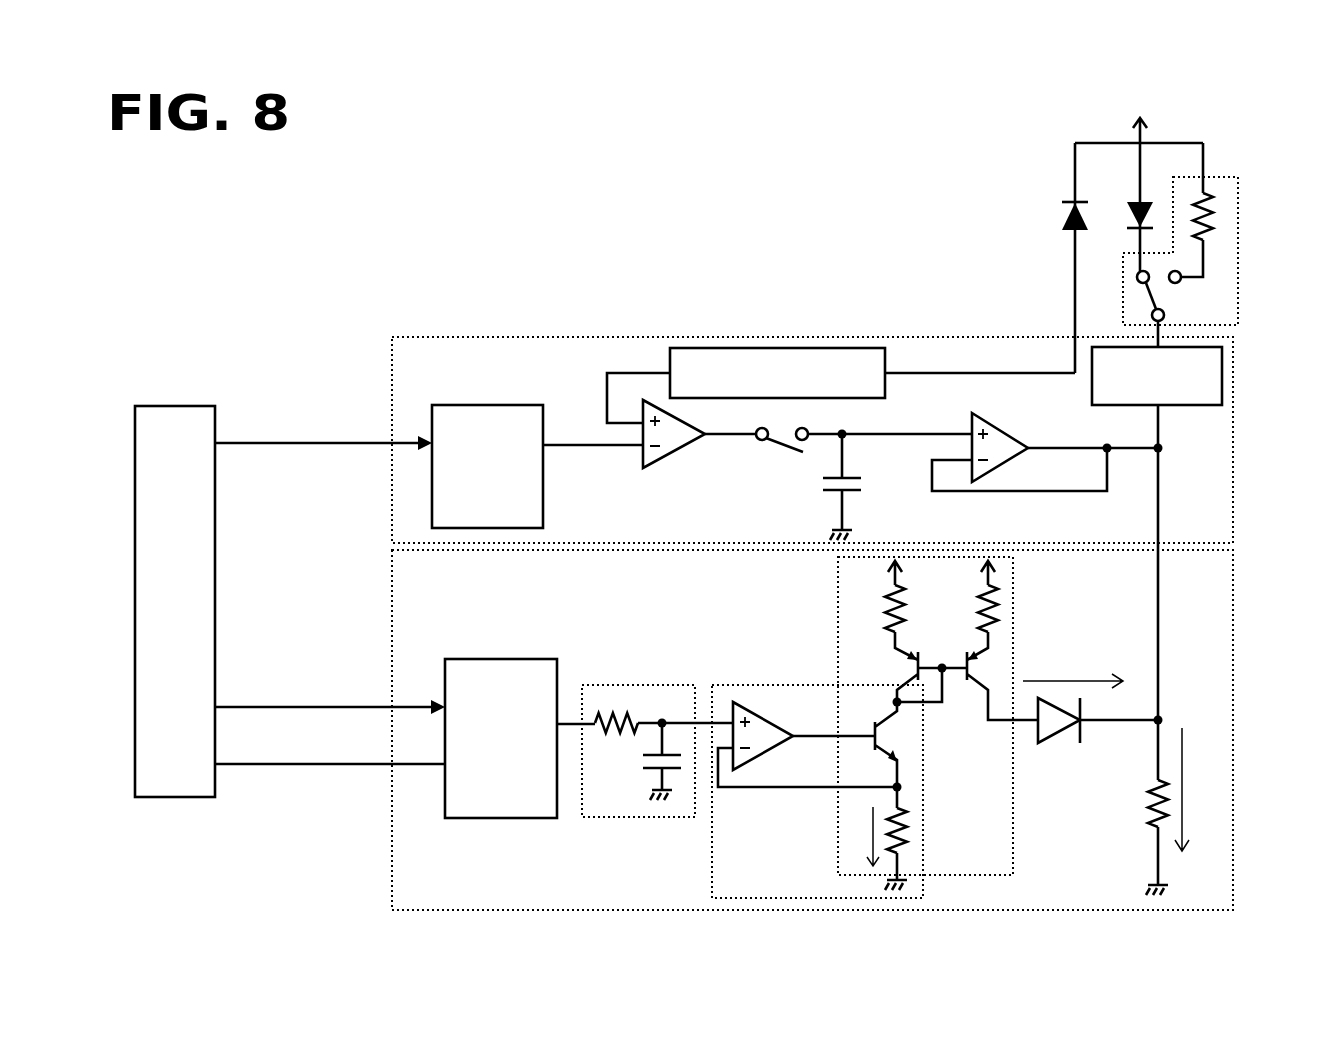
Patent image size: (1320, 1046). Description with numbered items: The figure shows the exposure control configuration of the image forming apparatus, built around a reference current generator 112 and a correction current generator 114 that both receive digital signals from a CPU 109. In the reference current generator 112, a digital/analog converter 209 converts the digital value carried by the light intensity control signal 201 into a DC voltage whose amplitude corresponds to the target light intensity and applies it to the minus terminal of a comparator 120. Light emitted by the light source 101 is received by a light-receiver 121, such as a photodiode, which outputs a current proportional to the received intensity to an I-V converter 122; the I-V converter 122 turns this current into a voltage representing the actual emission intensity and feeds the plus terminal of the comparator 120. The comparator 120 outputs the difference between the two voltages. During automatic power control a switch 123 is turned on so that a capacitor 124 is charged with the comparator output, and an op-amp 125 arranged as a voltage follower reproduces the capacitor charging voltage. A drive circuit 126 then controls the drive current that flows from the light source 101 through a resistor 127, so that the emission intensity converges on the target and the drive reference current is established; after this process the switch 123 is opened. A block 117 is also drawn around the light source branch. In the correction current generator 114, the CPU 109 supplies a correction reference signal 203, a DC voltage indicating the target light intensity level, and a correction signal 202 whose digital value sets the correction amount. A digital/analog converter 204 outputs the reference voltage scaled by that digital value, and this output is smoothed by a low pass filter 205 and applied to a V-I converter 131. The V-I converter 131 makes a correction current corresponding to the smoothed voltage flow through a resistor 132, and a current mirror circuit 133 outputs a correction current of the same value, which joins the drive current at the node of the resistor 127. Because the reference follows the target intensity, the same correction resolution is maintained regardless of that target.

The light source 101 is at (1128, 205).
The CPU 109 is at (188, 406).
The reference current generator 112 is at (470, 337).
The correction current generator 114 is at (392, 864).
The switch and resistor unit 117 is at (1232, 176).
The comparator 120 is at (643, 460).
The light-receiver 121 is at (1068, 202).
The I-V converter 122 is at (830, 348).
The switch 123 is at (770, 445).
The capacitor 124 is at (830, 497).
The op-amp 125 is at (972, 430).
The drive circuit 126 is at (1222, 362).
The resistor 127 is at (1148, 813).
The V-I converter 131 is at (795, 685).
The resistor 132 is at (905, 820).
The current mirror circuit 133 is at (838, 620).
The light intensity control signal 201 is at (322, 443).
The correction signal 202 is at (322, 707).
The correction reference signal 203 is at (322, 764).
The digital/analog converter 204 is at (497, 659).
The low pass filter 205 is at (645, 685).
The digital/analog converter 209 is at (500, 405).